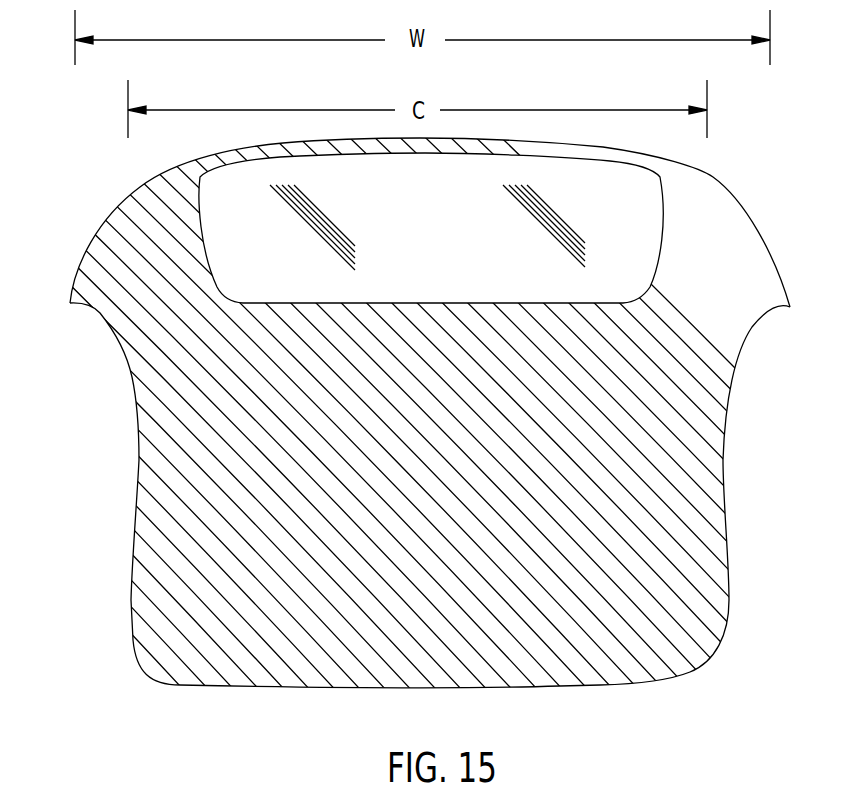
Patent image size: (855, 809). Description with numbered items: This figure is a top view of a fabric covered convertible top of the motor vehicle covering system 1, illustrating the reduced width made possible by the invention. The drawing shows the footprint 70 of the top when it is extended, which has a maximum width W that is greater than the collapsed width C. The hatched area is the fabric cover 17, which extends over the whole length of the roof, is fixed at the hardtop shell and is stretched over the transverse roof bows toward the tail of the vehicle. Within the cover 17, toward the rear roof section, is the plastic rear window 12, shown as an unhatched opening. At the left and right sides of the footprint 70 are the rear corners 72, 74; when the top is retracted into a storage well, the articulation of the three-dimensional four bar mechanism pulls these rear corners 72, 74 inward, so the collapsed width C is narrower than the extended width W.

The motor vehicle covering system 1 is at (99, 659).
The plastic rear window 12 is at (438, 225).
The fabric cover 17 is at (717, 628).
The footprint 70 is at (98, 183).
The rear corner 72 is at (70, 305).
The rear corner 74 is at (790, 307).